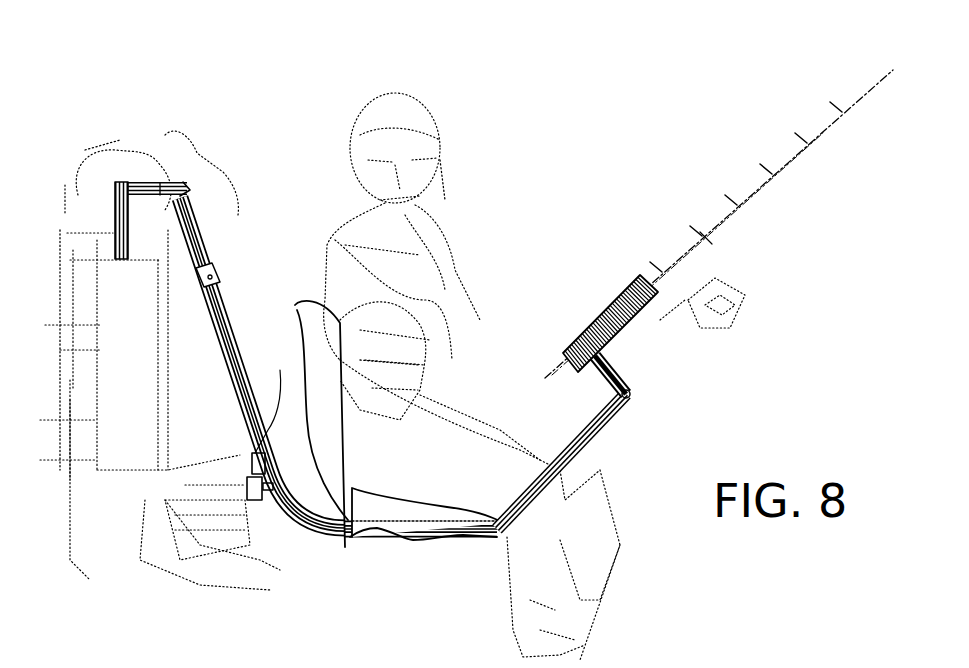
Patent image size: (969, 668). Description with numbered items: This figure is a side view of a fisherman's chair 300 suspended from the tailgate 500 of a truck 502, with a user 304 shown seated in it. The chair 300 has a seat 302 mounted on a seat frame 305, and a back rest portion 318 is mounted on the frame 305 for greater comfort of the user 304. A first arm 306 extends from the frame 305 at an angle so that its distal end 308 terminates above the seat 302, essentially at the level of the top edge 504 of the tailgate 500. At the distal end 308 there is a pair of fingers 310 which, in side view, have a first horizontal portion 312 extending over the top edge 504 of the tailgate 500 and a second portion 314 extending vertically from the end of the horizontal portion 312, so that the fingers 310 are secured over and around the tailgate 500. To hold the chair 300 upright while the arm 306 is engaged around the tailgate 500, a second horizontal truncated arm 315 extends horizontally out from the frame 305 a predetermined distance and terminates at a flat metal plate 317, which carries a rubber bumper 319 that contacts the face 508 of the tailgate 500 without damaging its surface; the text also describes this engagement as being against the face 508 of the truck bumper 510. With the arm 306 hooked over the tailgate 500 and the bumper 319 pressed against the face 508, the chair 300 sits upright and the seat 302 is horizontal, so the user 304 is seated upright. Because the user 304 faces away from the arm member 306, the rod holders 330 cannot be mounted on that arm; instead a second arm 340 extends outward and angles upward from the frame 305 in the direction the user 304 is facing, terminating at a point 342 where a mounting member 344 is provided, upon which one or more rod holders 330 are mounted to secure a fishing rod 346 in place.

The chair 300 is at (280, 232).
The seat 302 is at (415, 510).
The user 304 is at (410, 280).
The seat frame 305 is at (350, 538).
The first arm 306 is at (240, 323).
The distal end 308 is at (195, 197).
The pair of fingers 310 is at (139, 186).
The first horizontal portion 312 is at (155, 197).
The second portion 314 is at (113, 238).
The second horizontal truncated arm 315 is at (266, 490).
The flat metal plate 317 is at (240, 512).
The back rest portion 318 is at (327, 363).
The rubber bumper 319 is at (249, 466).
The rod holder 330 is at (603, 315).
The second arm 340 is at (607, 430).
The point 342 is at (640, 395).
The mounting member 344 is at (613, 390).
The fishing rod 346 is at (703, 233).
The tailgate 500 is at (222, 230).
The truck 502 is at (118, 134).
The top edge 504 is at (103, 215).
The face 508 is at (301, 424).
The truck bumper 510 is at (180, 450).